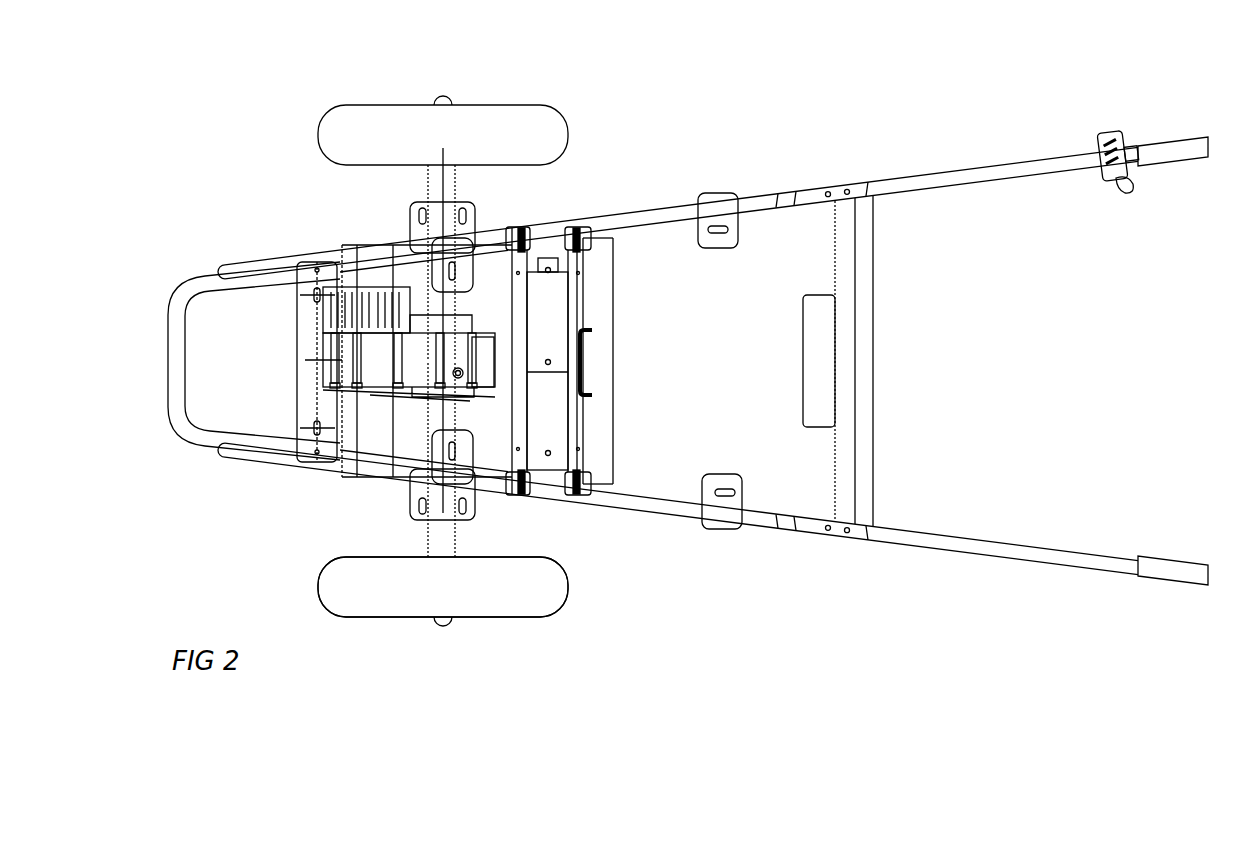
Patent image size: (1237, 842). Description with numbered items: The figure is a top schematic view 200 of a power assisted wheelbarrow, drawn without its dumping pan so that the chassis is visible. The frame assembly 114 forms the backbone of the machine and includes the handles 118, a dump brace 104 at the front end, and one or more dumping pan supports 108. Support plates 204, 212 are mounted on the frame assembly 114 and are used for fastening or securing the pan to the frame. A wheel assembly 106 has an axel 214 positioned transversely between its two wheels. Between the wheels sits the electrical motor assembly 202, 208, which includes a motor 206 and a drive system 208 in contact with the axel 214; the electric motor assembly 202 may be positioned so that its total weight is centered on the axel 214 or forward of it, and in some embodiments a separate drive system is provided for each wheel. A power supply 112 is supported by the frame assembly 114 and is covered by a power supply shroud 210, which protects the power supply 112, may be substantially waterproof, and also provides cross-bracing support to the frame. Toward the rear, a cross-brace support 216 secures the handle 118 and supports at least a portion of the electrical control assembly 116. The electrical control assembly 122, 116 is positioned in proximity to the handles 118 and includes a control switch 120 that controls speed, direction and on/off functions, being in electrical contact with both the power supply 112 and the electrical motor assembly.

The top schematic view 200 is at (797, 106).
The dump brace 104 is at (197, 435).
The wheel assembly 106 is at (560, 583).
The dumping pan support 108 is at (307, 452).
The power supply 112 is at (577, 286).
The frame assembly 114 is at (638, 493).
The electrical control assembly 116 is at (813, 360).
The handle 118 is at (1178, 156).
The control switch 120 is at (1124, 190).
The electrical control assembly 122 is at (1099, 142).
The electrical motor assembly 202 is at (491, 494).
The support plate 204 is at (410, 218).
The motor 206 is at (343, 294).
The drive system 208 is at (403, 398).
The power supply shroud 210 is at (563, 318).
The support plate 212 is at (708, 203).
The axel 214 is at (445, 190).
The cross-brace support 216 is at (857, 321).